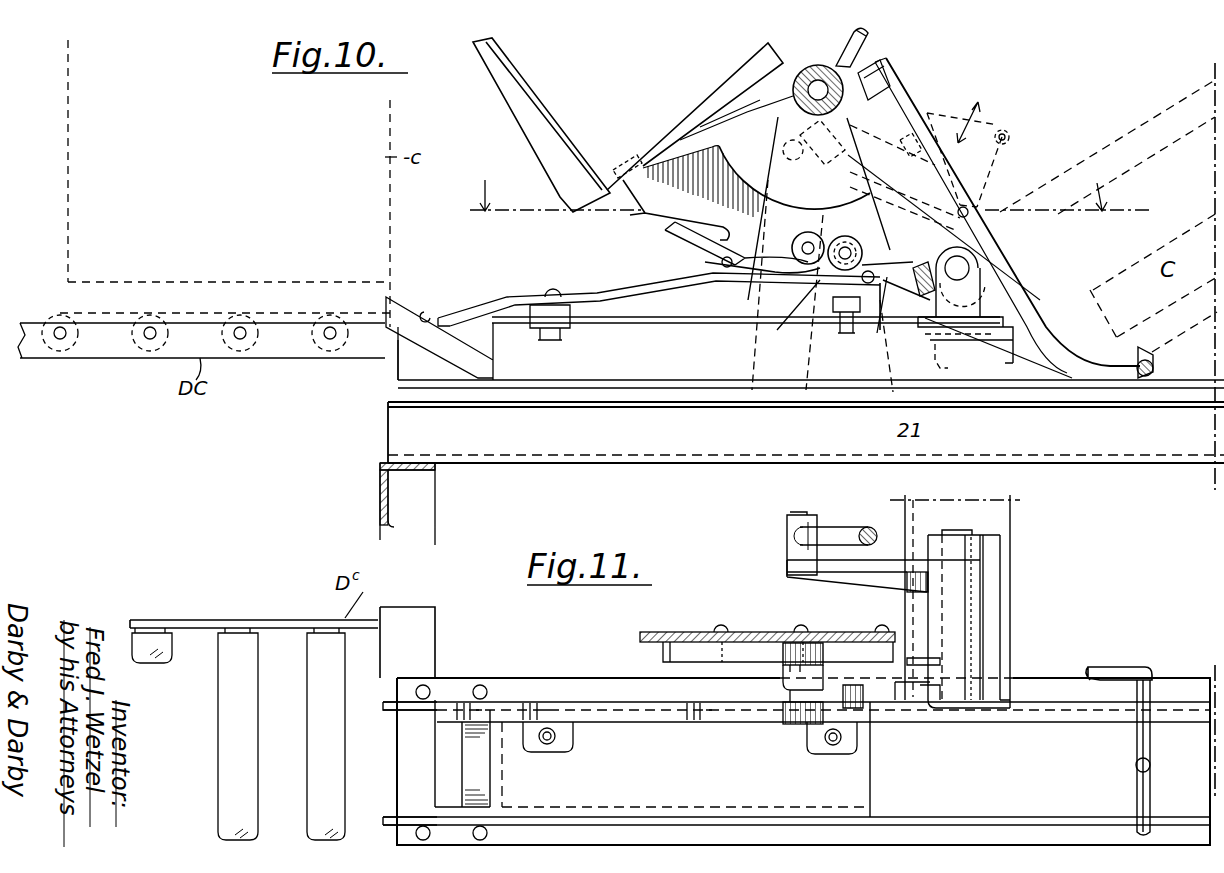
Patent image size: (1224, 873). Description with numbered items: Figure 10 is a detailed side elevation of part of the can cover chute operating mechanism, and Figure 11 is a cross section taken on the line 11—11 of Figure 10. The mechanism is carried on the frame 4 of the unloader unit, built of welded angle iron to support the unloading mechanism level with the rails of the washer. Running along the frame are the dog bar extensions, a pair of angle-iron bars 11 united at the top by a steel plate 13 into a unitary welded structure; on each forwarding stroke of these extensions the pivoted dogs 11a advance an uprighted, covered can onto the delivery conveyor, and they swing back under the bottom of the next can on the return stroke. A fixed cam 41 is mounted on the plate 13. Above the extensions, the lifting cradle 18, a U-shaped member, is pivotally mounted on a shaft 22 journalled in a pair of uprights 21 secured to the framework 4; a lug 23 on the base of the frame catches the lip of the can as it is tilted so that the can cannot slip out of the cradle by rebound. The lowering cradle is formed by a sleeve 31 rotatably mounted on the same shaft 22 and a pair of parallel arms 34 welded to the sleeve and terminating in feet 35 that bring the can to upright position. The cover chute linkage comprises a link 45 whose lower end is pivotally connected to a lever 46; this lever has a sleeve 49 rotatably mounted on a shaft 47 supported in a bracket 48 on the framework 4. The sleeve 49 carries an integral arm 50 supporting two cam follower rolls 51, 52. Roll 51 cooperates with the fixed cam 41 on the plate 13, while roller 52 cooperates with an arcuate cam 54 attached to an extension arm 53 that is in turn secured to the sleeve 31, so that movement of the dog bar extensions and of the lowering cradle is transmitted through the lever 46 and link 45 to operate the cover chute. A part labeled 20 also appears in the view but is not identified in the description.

In FIG. 10, the frame 4 is at (435, 512).
In FIG. 10, the bars 11 is at (811, 284).
In FIG. 11, the bars 11 is at (1088, 712).
In FIG. 10, the dogs 11a is at (417, 310).
In FIG. 11, the dogs 11a is at (393, 818).
In FIG. 11, the steel plate 13 is at (870, 778).
In FIG. 10, the lifting cradle 18 is at (1047, 337).
In FIG. 11, the lifting cradle 18 is at (1125, 667).
In FIG. 10, the base frame 20 is at (560, 463).
In FIG. 10, the uprights 21 is at (885, 372).
In FIG. 10, the shaft 22 is at (818, 78).
In FIG. 10, the lug 23 is at (1152, 358).
In FIG. 11, the lug 23 is at (1151, 765).
In FIG. 10, the sleeve 31 is at (883, 95).
In FIG. 10, the parallel arms 34 is at (697, 103).
In FIG. 10, the feet 35 is at (543, 103).
In FIG. 10, the fixed cam 41 is at (620, 290).
In FIG. 11, the fixed cam 41 is at (620, 715).
In FIG. 10, the link 45 is at (872, 46).
In FIG. 11, the link 45 is at (847, 528).
In FIG. 10, the lever 46 is at (900, 208).
In FIG. 11, the lever 46 is at (852, 567).
In FIG. 10, the shaft 47 is at (965, 270).
In FIG. 11, the shaft 47 is at (970, 532).
In FIG. 10, the bracket 48 is at (973, 307).
In FIG. 11, the bracket 48 is at (993, 619).
In FIG. 11, the sleeve 49 is at (980, 595).
In FIG. 10, the arm 50 is at (898, 296).
In FIG. 11, the arm 50 is at (900, 700).
In FIG. 10, the cam follower roll 51 is at (820, 300).
In FIG. 11, the cam follower roll 51 is at (815, 710).
In FIG. 10, the cam follower roller 52 is at (800, 242).
In FIG. 11, the cam follower roller 52 is at (813, 650).
In FIG. 10, the extension arm 53 is at (664, 210).
In FIG. 11, the extension arm 53 is at (650, 632).
In FIG. 10, the arcuate cam 54 is at (693, 249).
In FIG. 11, the arcuate cam 54 is at (670, 655).